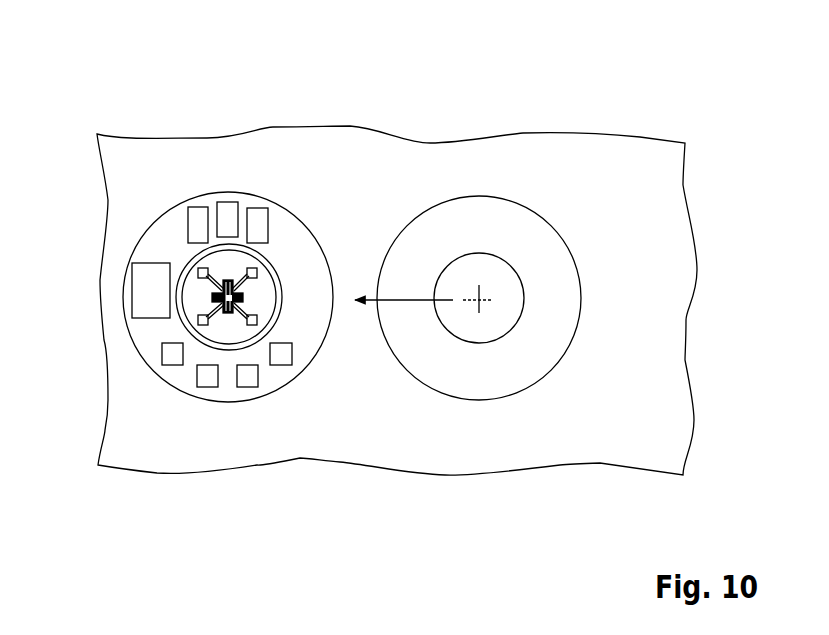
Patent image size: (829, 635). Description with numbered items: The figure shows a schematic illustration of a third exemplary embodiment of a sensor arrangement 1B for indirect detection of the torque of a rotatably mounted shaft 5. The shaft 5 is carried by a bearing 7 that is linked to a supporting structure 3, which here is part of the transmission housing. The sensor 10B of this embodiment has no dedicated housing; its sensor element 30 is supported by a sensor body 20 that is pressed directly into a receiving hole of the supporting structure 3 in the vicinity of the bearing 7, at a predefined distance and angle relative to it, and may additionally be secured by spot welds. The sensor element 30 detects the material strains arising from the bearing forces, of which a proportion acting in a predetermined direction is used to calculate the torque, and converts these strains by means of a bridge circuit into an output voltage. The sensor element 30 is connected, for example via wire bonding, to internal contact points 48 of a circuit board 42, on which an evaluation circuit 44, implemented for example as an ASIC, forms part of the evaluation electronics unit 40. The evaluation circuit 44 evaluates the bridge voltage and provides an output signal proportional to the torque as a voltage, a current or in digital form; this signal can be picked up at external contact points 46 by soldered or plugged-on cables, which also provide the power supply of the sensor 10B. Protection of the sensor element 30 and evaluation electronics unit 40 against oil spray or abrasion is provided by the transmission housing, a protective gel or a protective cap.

The sensor arrangement 1B is at (140, 77).
The supporting structure 3 is at (683, 246).
The shaft 5 is at (513, 300).
The bearing 7 is at (558, 334).
The evaluation electronics unit 40 is at (120, 279).
The circuit board 42 is at (153, 244).
The evaluation circuit 44 is at (150, 298).
The external contact points 46 is at (198, 216).
The internal contact points 48 is at (163, 354).
The sensor 10B is at (168, 328).
The sensor body 20 is at (262, 288).
The sensor element 30 is at (227, 296).